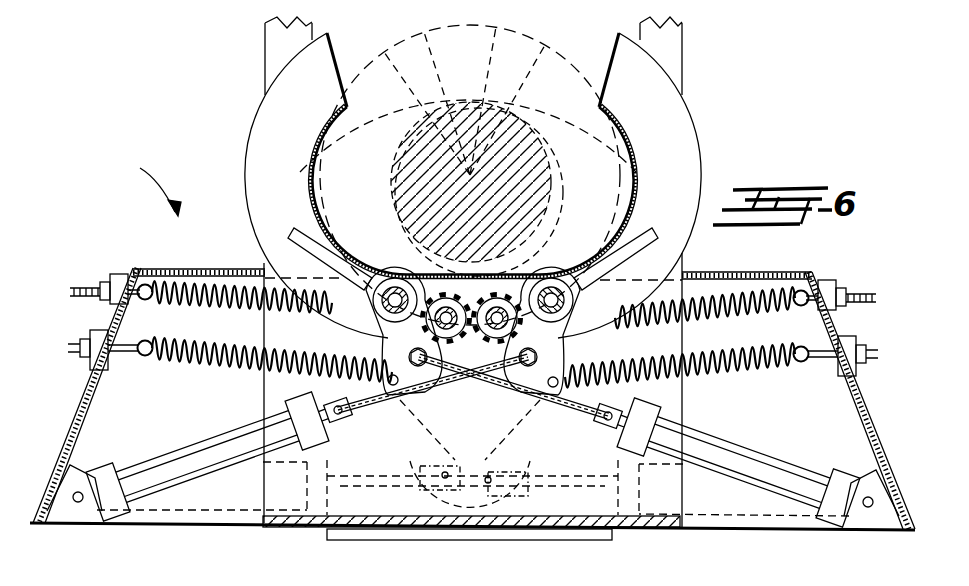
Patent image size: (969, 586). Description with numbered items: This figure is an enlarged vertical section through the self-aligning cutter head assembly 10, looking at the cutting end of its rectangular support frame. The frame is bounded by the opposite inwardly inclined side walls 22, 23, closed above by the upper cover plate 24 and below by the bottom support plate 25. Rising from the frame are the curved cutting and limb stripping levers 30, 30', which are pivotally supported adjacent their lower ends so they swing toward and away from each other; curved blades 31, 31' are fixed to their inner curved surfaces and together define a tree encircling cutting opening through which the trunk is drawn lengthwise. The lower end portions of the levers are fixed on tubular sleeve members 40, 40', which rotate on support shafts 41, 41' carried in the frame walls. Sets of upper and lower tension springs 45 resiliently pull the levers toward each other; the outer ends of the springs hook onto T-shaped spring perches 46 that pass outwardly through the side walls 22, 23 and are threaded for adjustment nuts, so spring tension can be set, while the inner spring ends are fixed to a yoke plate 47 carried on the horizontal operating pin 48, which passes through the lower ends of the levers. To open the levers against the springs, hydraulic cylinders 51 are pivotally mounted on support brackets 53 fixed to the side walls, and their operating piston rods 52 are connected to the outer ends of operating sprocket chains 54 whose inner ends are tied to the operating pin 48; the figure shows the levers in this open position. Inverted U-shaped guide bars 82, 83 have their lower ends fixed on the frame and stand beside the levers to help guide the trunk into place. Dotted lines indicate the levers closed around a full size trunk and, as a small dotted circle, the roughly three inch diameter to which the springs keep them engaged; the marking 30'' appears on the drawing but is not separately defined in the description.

The self-aligning cutter head assembly 10 is at (144, 181).
The side wall 22 is at (880, 438).
The side wall 23 is at (72, 432).
The upper cover plate 24 is at (205, 268).
The bottom support plate 25 is at (315, 530).
The curved cutting and limb stripping lever 30 is at (510, 181).
The curved cutting and limb stripping lever 30' is at (468, 89).
The left jaw / small log 30'' is at (404, 185).
The curved blade 31 is at (577, 191).
The curved blade 31' is at (369, 191).
The tubular sleeve member 40 is at (581, 311).
The tubular sleeve member 40' is at (365, 311).
The support shaft 41 is at (555, 275).
The support shaft 41' is at (389, 276).
The tension springs 45 is at (240, 305).
The T-shaped spring perches 46 is at (157, 322).
The yoke plate 47 is at (522, 395).
The operating pin 48 is at (395, 390).
The hydraulic cylinders 51 is at (150, 468).
The operating piston rods 52 is at (330, 422).
The support brackets 53 is at (68, 512).
The operating sprocket chains 54 is at (512, 385).
The inverted U-shaped guide bar 82 is at (682, 46).
The inverted U-shaped guide bar 83 is at (263, 44).